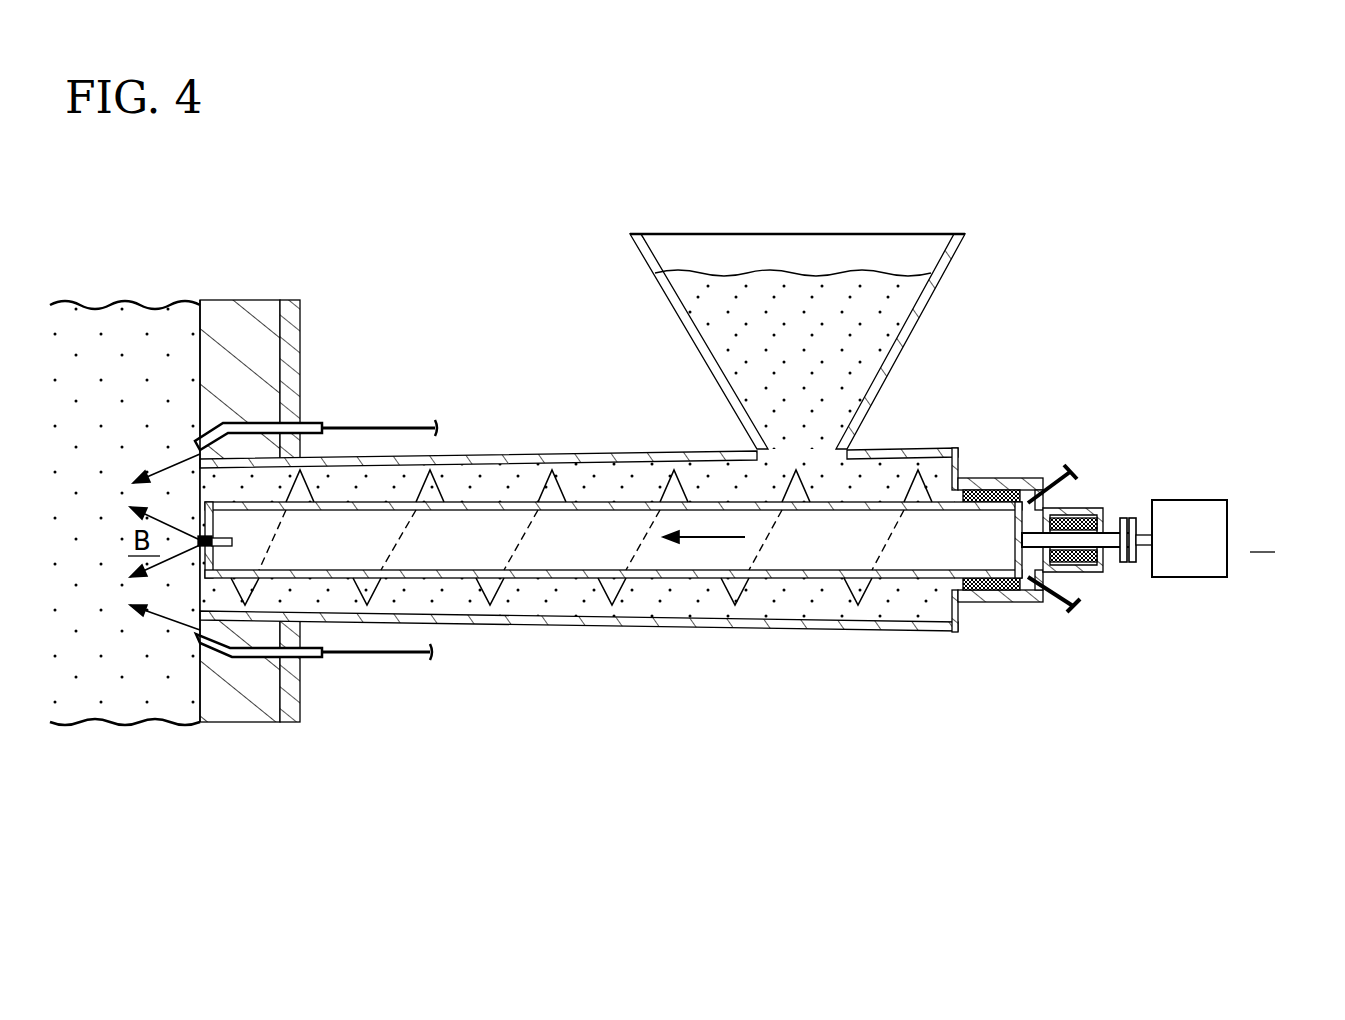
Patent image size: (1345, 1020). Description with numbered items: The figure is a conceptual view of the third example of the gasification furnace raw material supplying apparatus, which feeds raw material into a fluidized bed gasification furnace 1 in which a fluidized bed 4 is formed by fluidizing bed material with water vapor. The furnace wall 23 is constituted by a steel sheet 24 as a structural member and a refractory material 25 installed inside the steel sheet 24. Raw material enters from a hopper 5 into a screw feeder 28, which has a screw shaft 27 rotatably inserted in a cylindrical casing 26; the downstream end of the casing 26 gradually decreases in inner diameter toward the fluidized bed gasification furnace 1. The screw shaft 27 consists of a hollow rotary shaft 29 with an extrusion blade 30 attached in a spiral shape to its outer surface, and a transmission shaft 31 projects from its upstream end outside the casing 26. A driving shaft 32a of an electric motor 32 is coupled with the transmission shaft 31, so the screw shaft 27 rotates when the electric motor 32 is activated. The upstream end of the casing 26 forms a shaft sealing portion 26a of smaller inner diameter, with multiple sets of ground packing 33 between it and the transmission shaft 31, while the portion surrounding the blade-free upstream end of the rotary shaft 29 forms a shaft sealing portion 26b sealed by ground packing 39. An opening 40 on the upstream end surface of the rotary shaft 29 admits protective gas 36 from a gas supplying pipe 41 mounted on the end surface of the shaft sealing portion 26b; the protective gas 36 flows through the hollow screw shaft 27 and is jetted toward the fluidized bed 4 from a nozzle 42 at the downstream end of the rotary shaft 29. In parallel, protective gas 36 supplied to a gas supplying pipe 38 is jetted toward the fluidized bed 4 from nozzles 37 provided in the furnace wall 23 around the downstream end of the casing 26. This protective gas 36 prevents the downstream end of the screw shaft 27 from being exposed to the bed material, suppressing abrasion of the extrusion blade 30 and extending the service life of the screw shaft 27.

The fluidized bed gasification furnace 1 is at (318, 488).
The fluidized bed 4 is at (115, 322).
The hopper 5 is at (805, 283).
The furnace wall 23 is at (314, 447).
The steel sheet 24 is at (291, 304).
The refractory material 25 is at (232, 306).
The cylindrical casing 26 is at (606, 447).
The shaft sealing portion 26a is at (1090, 508).
The shaft sealing portion 26b is at (1015, 478).
The screw shaft 27 is at (703, 594).
The screw feeder 28 is at (752, 553).
The rotary shaft 29 is at (640, 580).
The extrusion blade 30 is at (500, 607).
The transmission shaft 31 is at (1112, 548).
The electric motor 32 is at (1225, 510).
The driving shaft 32a is at (1135, 520).
The ground packing 33 is at (1075, 565).
The protective gas 36 is at (168, 440).
The nozzles 37 is at (318, 432).
The gas supplying pipe 38 is at (437, 425).
The ground packing 39 is at (988, 488).
The opening 40 is at (1012, 515).
The gas supplying pipe 41 is at (1072, 470).
The nozzle 42 is at (216, 540).